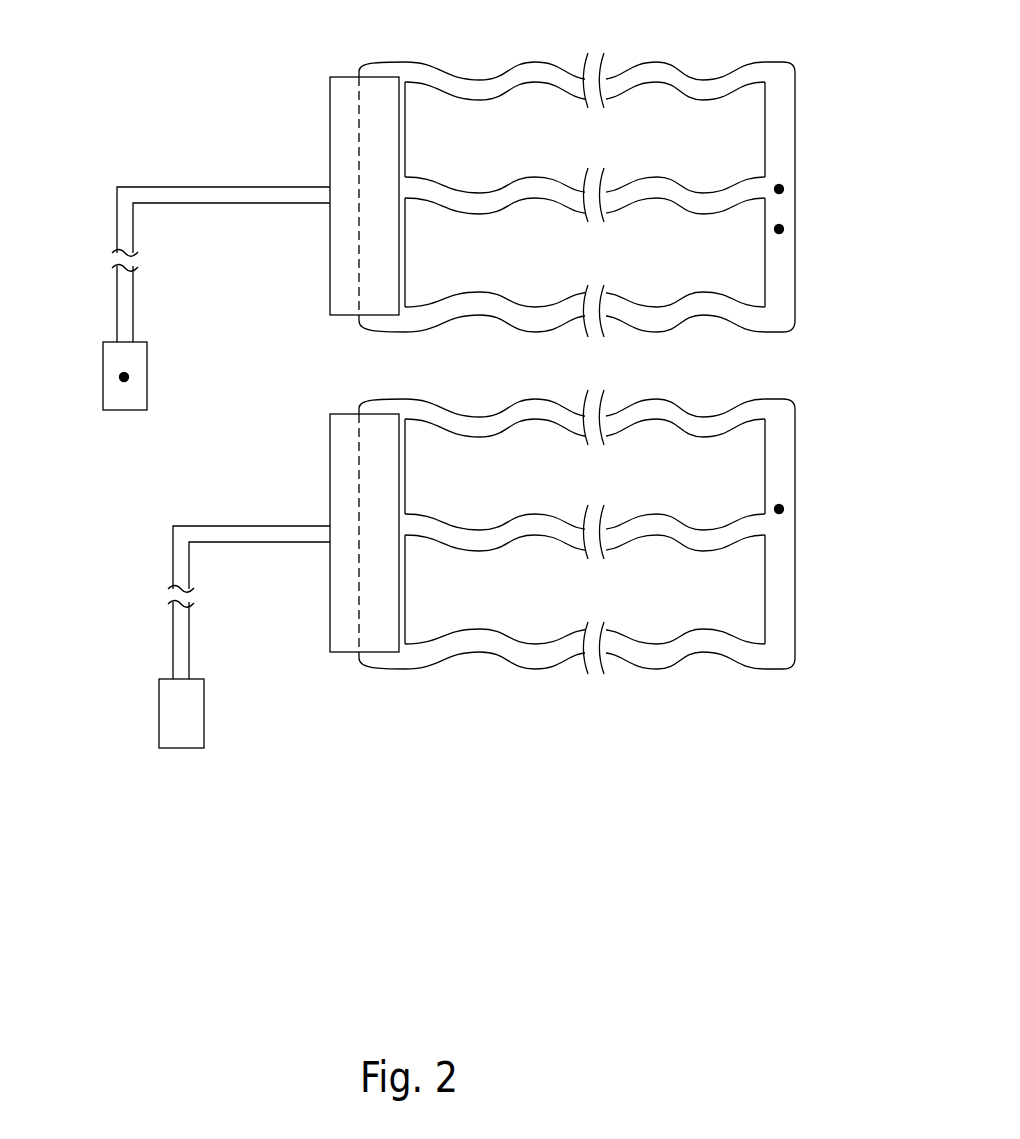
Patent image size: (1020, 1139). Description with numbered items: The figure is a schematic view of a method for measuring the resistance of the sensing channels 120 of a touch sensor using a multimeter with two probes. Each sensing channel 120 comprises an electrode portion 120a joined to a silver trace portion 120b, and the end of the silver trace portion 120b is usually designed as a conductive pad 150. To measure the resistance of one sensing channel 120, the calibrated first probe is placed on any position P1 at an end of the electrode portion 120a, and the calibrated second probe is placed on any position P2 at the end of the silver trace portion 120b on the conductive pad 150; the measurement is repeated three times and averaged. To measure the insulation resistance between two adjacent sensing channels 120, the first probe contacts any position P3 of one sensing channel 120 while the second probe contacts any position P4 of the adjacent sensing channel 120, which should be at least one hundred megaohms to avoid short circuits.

The sensing channel 120 is at (501, 364).
The electrode portion 120a is at (657, 63).
The silver trace portion 120b is at (207, 198).
The conductive pad 150 is at (118, 377).
The position P1 is at (784, 229).
The position P2 is at (129, 377).
The position P3 is at (784, 189).
The position P4 is at (784, 509).